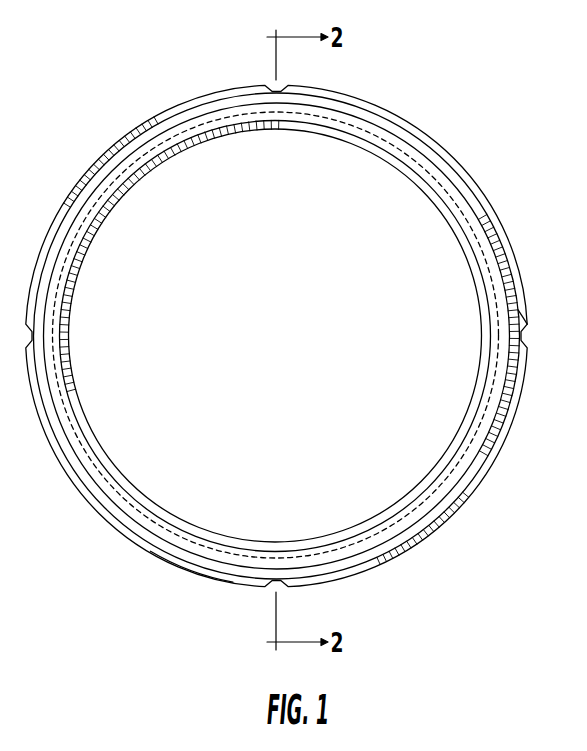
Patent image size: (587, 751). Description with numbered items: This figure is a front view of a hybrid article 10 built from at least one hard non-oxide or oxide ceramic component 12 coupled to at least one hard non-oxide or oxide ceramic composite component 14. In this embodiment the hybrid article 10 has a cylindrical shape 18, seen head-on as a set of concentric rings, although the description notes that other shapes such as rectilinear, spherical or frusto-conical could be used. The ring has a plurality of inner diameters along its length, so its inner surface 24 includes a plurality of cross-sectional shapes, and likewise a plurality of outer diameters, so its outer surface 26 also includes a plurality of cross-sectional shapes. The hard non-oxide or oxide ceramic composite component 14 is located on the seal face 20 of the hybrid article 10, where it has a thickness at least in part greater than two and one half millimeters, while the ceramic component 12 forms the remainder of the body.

The hybrid article 10 is at (525, 128).
The hard non-oxide or oxide ceramic component 12 is at (123, 140).
The hard non-oxide or oxide ceramic composite component 14 is at (402, 147).
The cylindrical shape 18 is at (407, 551).
The seal face 20 is at (500, 297).
The inner surface 24 is at (90, 243).
The outer surface 26 is at (190, 573).